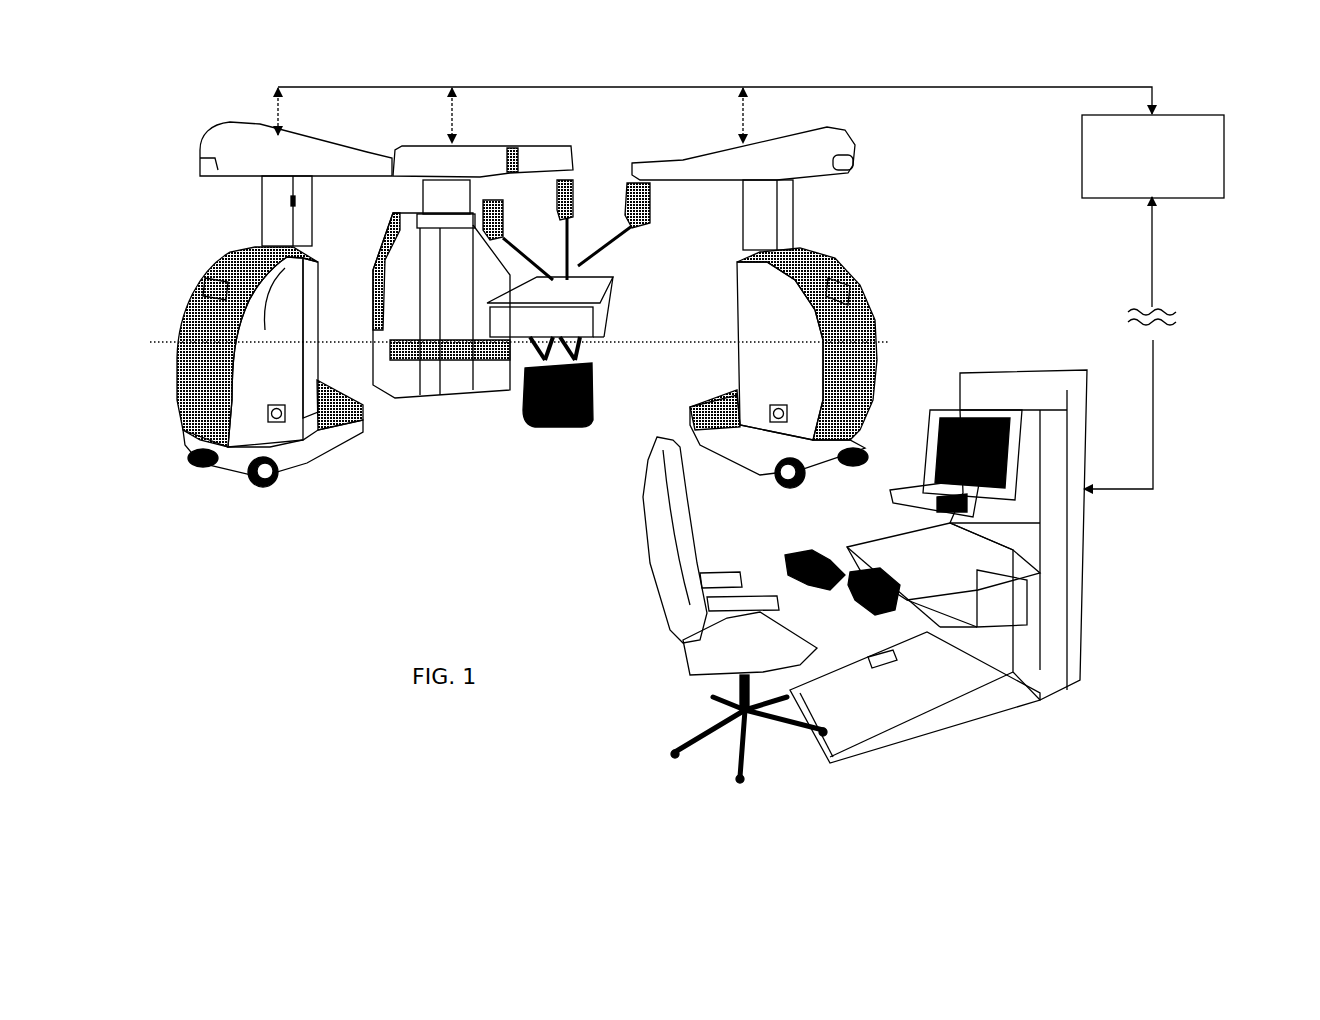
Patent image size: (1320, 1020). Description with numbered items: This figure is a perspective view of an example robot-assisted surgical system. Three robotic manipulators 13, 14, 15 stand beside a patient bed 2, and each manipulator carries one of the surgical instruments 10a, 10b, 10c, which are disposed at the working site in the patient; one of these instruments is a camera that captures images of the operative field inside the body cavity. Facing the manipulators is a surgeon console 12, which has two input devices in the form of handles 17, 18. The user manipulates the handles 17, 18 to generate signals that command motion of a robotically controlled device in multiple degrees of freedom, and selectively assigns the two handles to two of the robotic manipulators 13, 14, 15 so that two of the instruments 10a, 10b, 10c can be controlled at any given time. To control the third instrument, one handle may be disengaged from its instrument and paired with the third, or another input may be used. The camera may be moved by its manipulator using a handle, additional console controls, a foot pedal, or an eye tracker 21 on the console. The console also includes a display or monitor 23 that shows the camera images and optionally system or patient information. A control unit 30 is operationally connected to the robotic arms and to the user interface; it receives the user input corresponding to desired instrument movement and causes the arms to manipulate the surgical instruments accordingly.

The patient bed 2 is at (542, 288).
The surgical instrument 10a is at (605, 257).
The surgical instrument 10b is at (570, 212).
The surgical instrument 10c is at (505, 240).
The surgeon console 12 is at (1107, 652).
The robotic manipulator 13 is at (200, 139).
The robotic manipulator 14 is at (483, 145).
The robotic manipulator 15 is at (805, 142).
The handle 17 is at (811, 552).
The handle 18 is at (822, 587).
The eye tracker 21 is at (921, 484).
The display or monitor 23 is at (952, 423).
The control unit 30 is at (1224, 135).